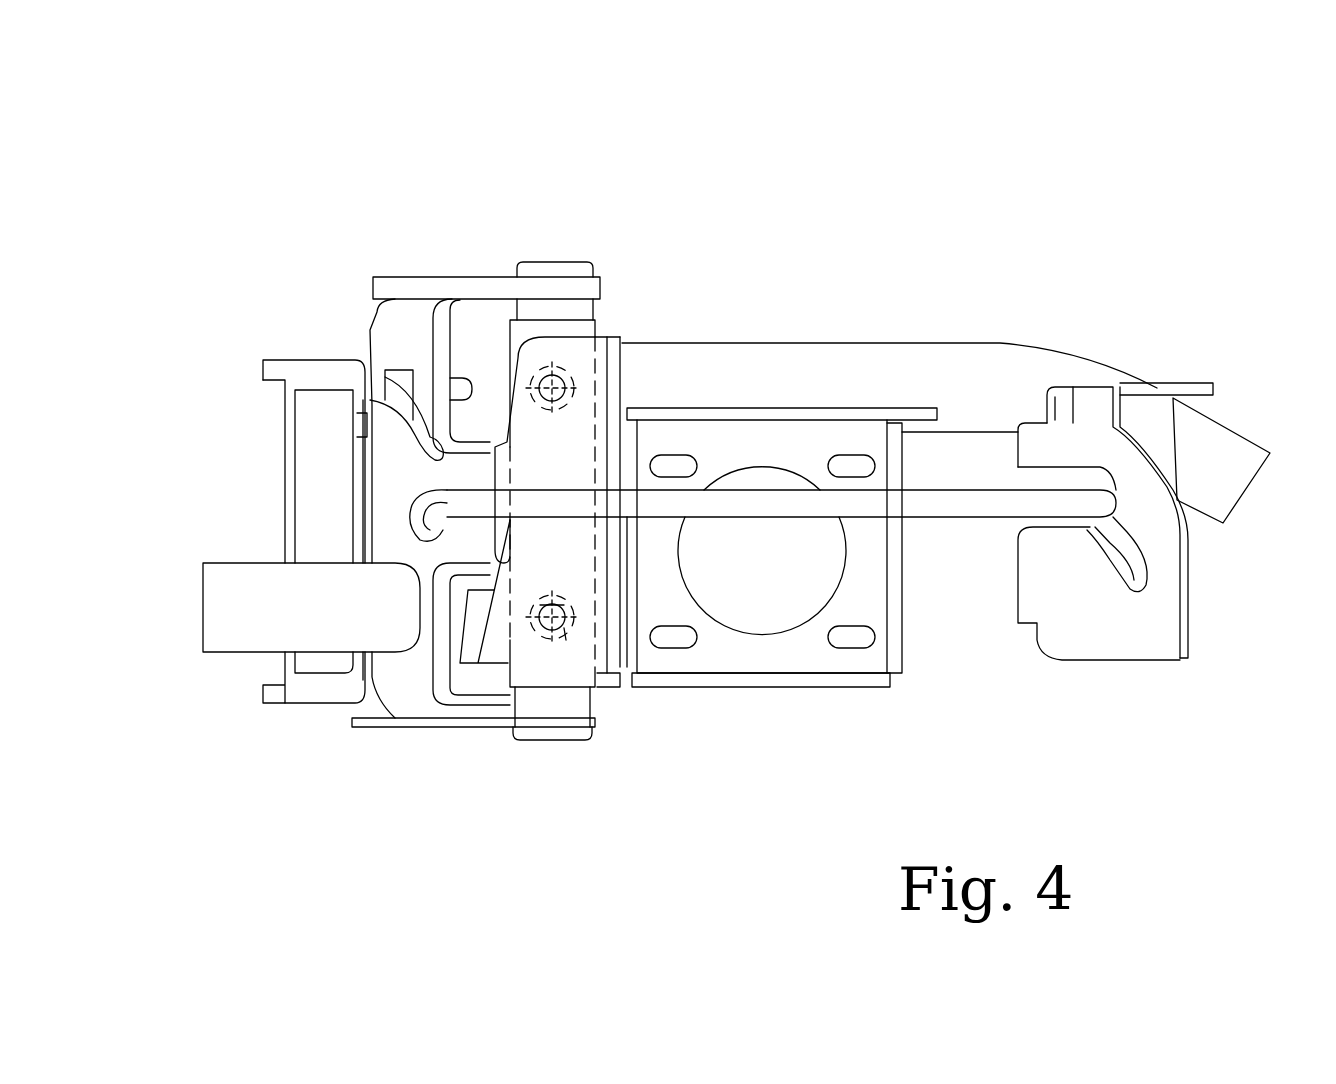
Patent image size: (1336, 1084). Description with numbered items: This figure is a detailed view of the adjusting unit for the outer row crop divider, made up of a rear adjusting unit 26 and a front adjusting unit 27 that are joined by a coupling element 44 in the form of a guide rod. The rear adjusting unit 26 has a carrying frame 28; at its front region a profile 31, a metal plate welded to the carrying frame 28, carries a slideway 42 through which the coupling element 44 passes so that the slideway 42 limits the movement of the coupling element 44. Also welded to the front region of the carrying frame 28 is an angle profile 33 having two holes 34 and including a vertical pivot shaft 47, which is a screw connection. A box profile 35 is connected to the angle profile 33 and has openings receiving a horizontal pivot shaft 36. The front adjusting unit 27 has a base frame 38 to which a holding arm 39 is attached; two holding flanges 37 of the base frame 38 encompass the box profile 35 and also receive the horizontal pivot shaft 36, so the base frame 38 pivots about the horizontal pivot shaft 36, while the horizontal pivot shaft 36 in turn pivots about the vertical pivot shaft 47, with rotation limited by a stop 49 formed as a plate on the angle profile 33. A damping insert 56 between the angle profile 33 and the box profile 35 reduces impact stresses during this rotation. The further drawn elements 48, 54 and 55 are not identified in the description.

The rear adjusting unit 26 is at (918, 272).
The front adjusting unit 27 is at (297, 305).
The carrying frame 28 is at (987, 375).
The profile 31 is at (1076, 612).
The angle profile 33 is at (575, 358).
The holes 34 is at (553, 377).
The box profile 35 is at (597, 703).
The horizontal pivot shaft 36 is at (535, 262).
The holding flanges 37 is at (455, 290).
The base frame 38 is at (397, 706).
The holding arm 39 is at (225, 617).
The slideway 42 is at (1140, 553).
The coupling element 44 is at (944, 500).
The vertical pivot shaft 47 is at (547, 628).
The plate 48 is at (575, 378).
The stop 49 is at (462, 656).
The spring 54 is at (375, 418).
The washer 55 is at (556, 630).
The damping insert 56 is at (485, 677).